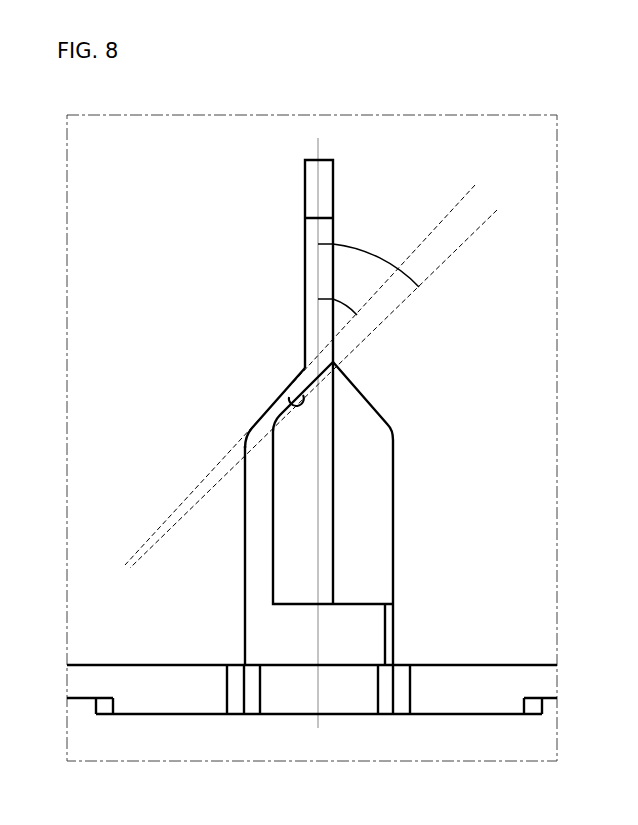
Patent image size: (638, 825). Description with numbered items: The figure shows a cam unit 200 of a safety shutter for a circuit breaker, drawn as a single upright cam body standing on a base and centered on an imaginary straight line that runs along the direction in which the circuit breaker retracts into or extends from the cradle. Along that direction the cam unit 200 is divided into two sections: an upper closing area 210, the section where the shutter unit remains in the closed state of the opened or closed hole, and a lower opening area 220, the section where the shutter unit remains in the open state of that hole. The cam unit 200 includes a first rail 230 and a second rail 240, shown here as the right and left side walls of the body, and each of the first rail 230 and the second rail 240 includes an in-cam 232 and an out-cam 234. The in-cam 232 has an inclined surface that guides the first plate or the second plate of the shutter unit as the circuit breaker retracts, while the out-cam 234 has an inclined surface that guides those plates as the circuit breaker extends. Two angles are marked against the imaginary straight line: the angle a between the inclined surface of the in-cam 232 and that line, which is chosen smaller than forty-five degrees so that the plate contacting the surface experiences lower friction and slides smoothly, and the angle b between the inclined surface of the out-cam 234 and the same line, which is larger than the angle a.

The cam unit 200 is at (160, 146).
The closing area 210 is at (308, 201).
The opening area 220 is at (328, 413).
The first rail 230 is at (395, 475).
The in-cam 232 is at (263, 413).
The out-cam 234 is at (278, 402).
The second rail 240 is at (258, 521).
The angle a is at (337, 296).
The angle b is at (368, 259).